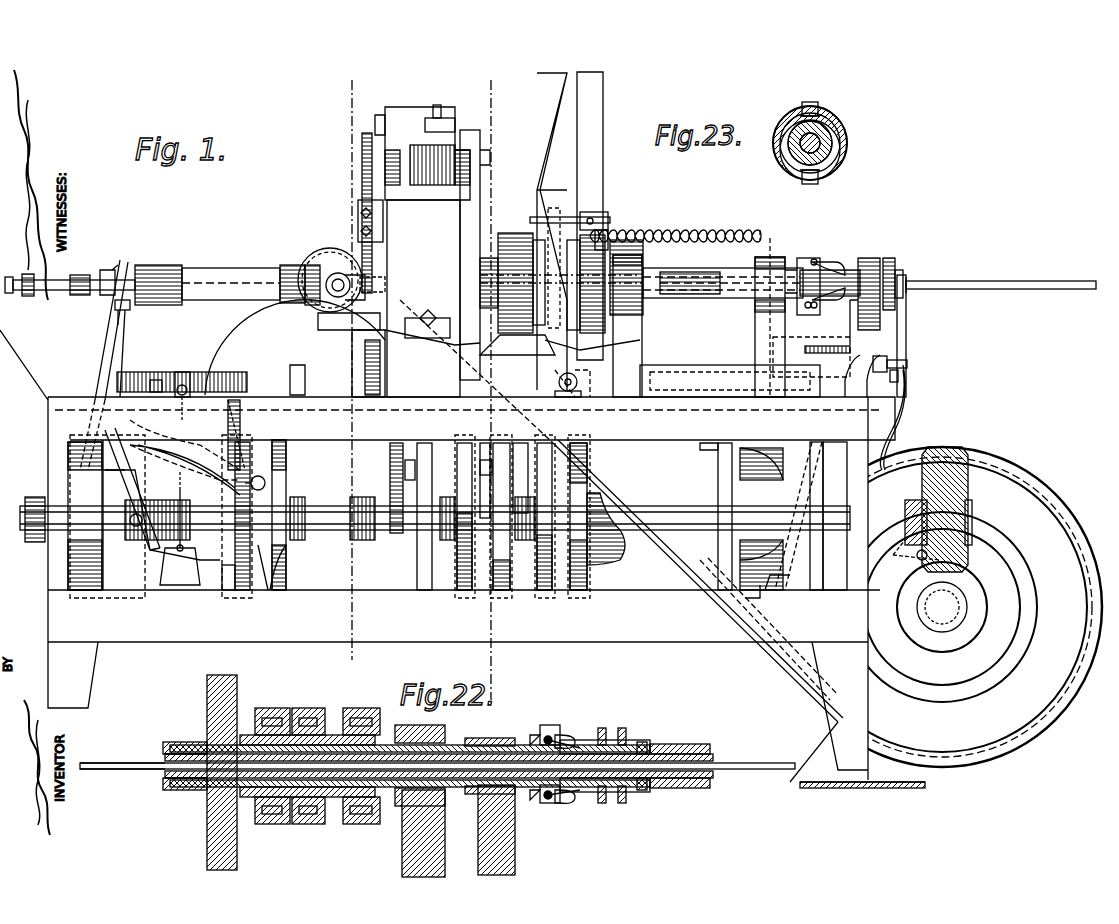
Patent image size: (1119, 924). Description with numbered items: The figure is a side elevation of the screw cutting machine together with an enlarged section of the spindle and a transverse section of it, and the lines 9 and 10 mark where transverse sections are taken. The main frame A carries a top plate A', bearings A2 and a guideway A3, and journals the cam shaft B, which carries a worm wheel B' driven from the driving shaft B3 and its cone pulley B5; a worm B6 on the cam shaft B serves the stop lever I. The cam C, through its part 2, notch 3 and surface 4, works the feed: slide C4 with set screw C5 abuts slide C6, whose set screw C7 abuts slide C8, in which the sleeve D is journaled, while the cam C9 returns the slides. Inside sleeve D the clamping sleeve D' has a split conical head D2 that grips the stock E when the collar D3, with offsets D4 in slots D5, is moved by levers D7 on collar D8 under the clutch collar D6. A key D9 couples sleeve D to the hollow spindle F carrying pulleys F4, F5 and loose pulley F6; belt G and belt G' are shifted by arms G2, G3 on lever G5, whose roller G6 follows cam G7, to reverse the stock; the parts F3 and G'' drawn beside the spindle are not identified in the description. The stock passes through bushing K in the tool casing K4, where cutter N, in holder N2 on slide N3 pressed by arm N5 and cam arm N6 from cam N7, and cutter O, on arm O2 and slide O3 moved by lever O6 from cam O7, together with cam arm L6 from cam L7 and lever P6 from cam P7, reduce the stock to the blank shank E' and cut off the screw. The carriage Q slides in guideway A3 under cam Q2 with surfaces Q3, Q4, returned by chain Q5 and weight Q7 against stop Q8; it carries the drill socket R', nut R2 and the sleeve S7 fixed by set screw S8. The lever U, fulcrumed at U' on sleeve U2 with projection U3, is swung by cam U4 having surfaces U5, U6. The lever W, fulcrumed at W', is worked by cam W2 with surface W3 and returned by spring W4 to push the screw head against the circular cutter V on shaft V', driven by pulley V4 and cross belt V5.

In FIG. 1, the section line 9— 9 is at (298, 92).
In FIG. 1, the section line 10— 10 is at (545, 92).
In FIG. 1, the main frame A is at (486, 592).
In FIG. 1, the top plate A' is at (730, 371).
In FIG. 1, the bearings A2 is at (645, 337).
In FIG. 22, the bearings A2 is at (402, 855).
In FIG. 1, the guideway A3 is at (240, 372).
In FIG. 22, the guideway A3 is at (207, 800).
In FIG. 1, the cam shaft B is at (435, 515).
In FIG. 1, the worm wheel B' is at (953, 496).
In FIG. 1, the driving shaft B3 is at (940, 615).
In FIG. 1, the cone pulley B5 is at (1010, 632).
In FIG. 1, the worm B6 is at (930, 490).
In FIG. 1, the cam C is at (793, 516).
In FIG. 1, the slide C4 is at (910, 383).
In FIG. 1, the set screw C5 is at (908, 356).
In FIG. 1, the second slide C6 is at (815, 372).
In FIG. 1, the set screw C7 is at (828, 345).
In FIG. 1, the slide C8 is at (760, 336).
In FIG. 22, the slide C8 is at (507, 830).
In FIG. 1, the return cam C9 is at (730, 490).
In FIG. 1, the sleeve D is at (723, 294).
In FIG. 22, the sleeve D is at (410, 751).
In FIG. 23, the sleeve D is at (817, 137).
In FIG. 1, the clamping sleeve D' is at (914, 284).
In FIG. 22, the clamping sleeve D' is at (439, 751).
In FIG. 23, the clamping sleeve D' is at (814, 140).
In FIG. 22, the conical split head D2 is at (165, 780).
In FIG. 1, the collar D3 is at (825, 270).
In FIG. 22, the collar D3 is at (645, 787).
In FIG. 23, the collar D3 is at (845, 148).
In FIG. 22, the offsets D4 is at (565, 735).
In FIG. 23, the offsets D4 is at (812, 102).
In FIG. 22, the slots D5 is at (640, 742).
In FIG. 23, the slots D5 is at (802, 100).
In FIG. 1, the clutch collar D6 is at (858, 268).
In FIG. 22, the clutch collar D6 is at (610, 728).
In FIG. 1, the levers D7 is at (835, 265).
In FIG. 22, the levers D7 is at (560, 735).
In FIG. 1, the collar D8 is at (810, 258).
In FIG. 22, the collar D8 is at (540, 728).
In FIG. 1, the key D9 is at (735, 272).
In FIG. 22, the key D9 is at (450, 740).
In FIG. 22, the stock E is at (437, 753).
In FIG. 23, the stock E is at (842, 136).
In FIG. 1, the blank shank E' is at (1001, 275).
In FIG. 1, the hollow spindle F is at (640, 270).
In FIG. 22, the hollow spindle F is at (207, 730).
In FIG. 1, the gear F3 is at (561, 283).
In FIG. 1, the pulley F4 is at (605, 245).
In FIG. 22, the pulley F4 is at (355, 708).
In FIG. 22, the pulley F5 is at (265, 708).
In FIG. 1, the loose pulley F6 is at (540, 333).
In FIG. 22, the loose pulley F6 is at (305, 708).
In FIG. 1, the belt G is at (600, 216).
In FIG. 1, the second belt G' is at (543, 231).
In FIG. 1, the gear G'' is at (585, 297).
In FIG. 1, the shifting arm G2 is at (605, 222).
In FIG. 1, the shifting arm G3 is at (540, 222).
In FIG. 1, the shifting lever G5 is at (600, 395).
In FIG. 1, the friction roller G6 is at (595, 445).
In FIG. 1, the cam G7 is at (618, 555).
In FIG. 1, the stop lever I is at (905, 333).
In FIG. 1, the bushing K is at (225, 280).
In FIG. 1, the tool casing K4 is at (438, 263).
In FIG. 1, the cam arm L6 is at (518, 445).
In FIG. 1, the cam L7 is at (545, 585).
In FIG. 1, the cutting tool N is at (362, 176).
In FIG. 22, the cutting tool N is at (207, 855).
In FIG. 1, the holder N2 is at (385, 212).
In FIG. 1, the slide N3 is at (422, 139).
In FIG. 1, the arm N5 is at (445, 120).
In FIG. 1, the cam arm N6 is at (470, 445).
In FIG. 1, the cam N7 is at (498, 585).
In FIG. 1, the cutting tool O is at (385, 285).
In FIG. 1, the arm O2 is at (380, 358).
In FIG. 1, the slide O3 is at (415, 330).
In FIG. 1, the lever O6 is at (440, 445).
In FIG. 1, the cam O7 is at (460, 585).
In FIG. 1, the lever P6 is at (412, 445).
In FIG. 1, the cam P7 is at (395, 585).
In FIG. 1, the carriage Q is at (162, 353).
In FIG. 1, the cam Q2 is at (165, 515).
In FIG. 1, the cam surface Q3 is at (185, 473).
In FIG. 1, the cam surface Q4 is at (232, 582).
In FIG. 1, the chain Q5 is at (185, 458).
In FIG. 1, the weight Q7 is at (180, 527).
In FIG. 1, the stop Q8 is at (180, 381).
In FIG. 1, the socket R' is at (308, 270).
In FIG. 1, the nut R2 is at (42, 288).
In FIG. 1, the sleeve S7 is at (122, 275).
In FIG. 1, the set screw S8 is at (135, 308).
In FIG. 1, the lever U is at (24, 364).
In FIG. 1, the fulcrum U' is at (121, 515).
In FIG. 1, the sleeve U2 is at (153, 510).
In FIG. 1, the projection U3 is at (132, 489).
In FIG. 1, the cam U4 is at (85, 516).
In FIG. 1, the cam surface U5 is at (130, 520).
In FIG. 1, the cam surface U6 is at (128, 588).
In FIG. 1, the circular cutter V is at (330, 261).
In FIG. 1, the shaft V' is at (345, 289).
In FIG. 1, the pulley V4 is at (330, 316).
In FIG. 1, the cross belt V5 is at (765, 650).
In FIG. 1, the lever W is at (104, 365).
In FIG. 1, the fulcrum W' is at (185, 445).
In FIG. 1, the cam W2 is at (290, 478).
In FIG. 1, the cam surface W3 is at (286, 568).
In FIG. 1, the spring W4 is at (245, 425).
In FIG. 1, the cam part 2 is at (775, 535).
In FIG. 1, the notch 3 is at (775, 575).
In FIG. 1, the cam surface 4 is at (755, 590).